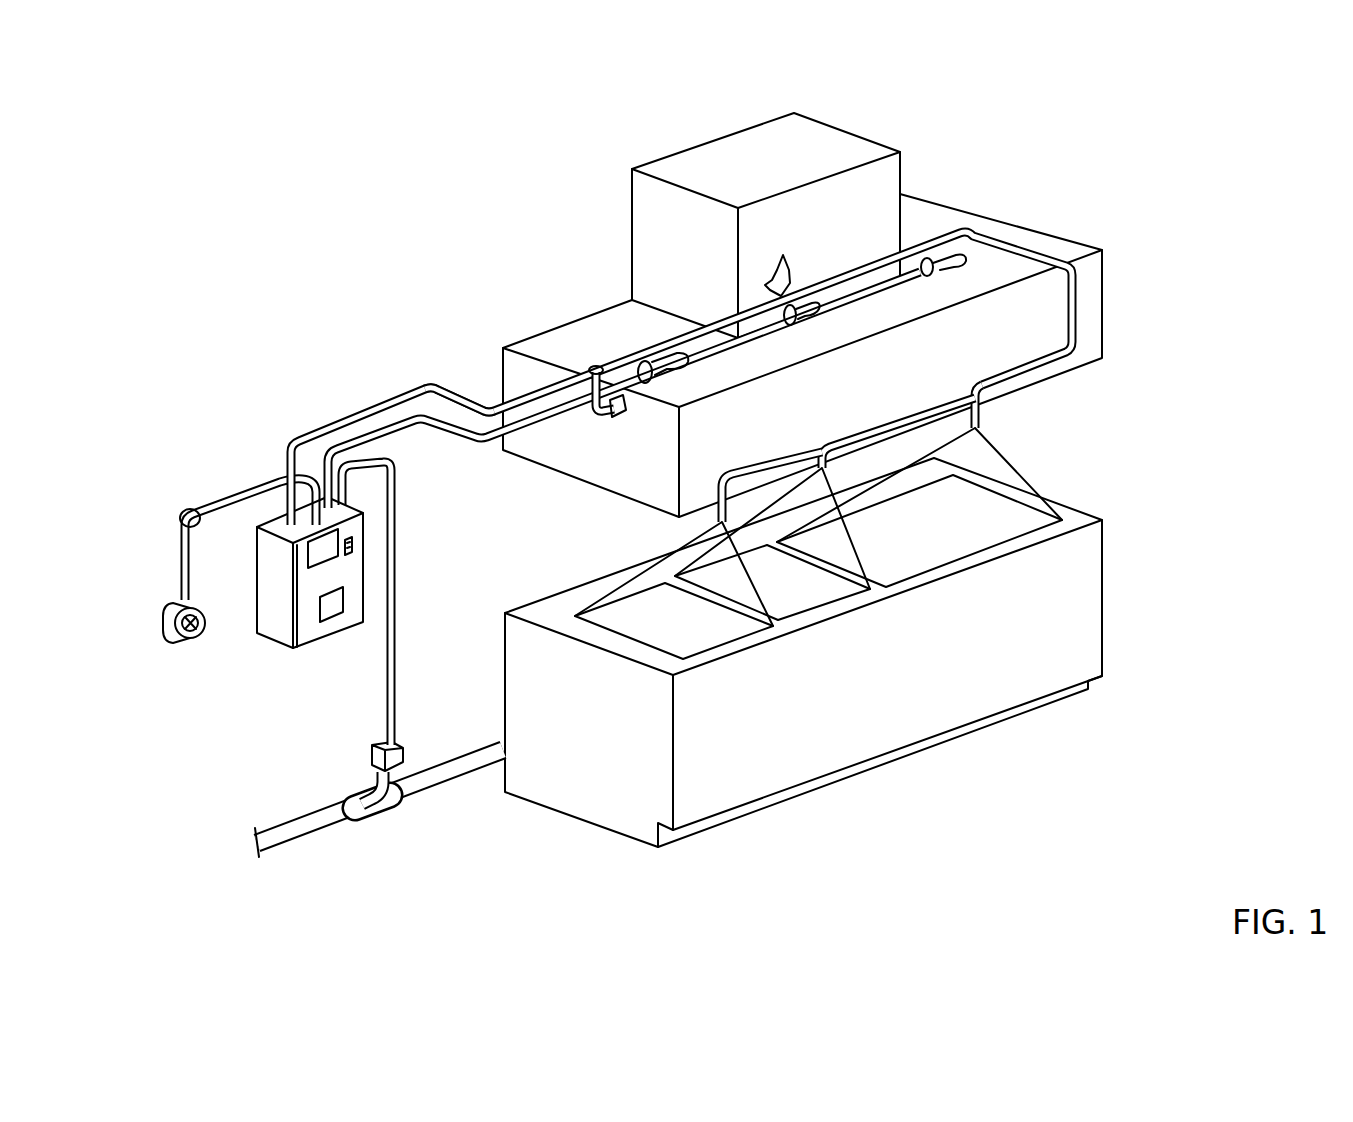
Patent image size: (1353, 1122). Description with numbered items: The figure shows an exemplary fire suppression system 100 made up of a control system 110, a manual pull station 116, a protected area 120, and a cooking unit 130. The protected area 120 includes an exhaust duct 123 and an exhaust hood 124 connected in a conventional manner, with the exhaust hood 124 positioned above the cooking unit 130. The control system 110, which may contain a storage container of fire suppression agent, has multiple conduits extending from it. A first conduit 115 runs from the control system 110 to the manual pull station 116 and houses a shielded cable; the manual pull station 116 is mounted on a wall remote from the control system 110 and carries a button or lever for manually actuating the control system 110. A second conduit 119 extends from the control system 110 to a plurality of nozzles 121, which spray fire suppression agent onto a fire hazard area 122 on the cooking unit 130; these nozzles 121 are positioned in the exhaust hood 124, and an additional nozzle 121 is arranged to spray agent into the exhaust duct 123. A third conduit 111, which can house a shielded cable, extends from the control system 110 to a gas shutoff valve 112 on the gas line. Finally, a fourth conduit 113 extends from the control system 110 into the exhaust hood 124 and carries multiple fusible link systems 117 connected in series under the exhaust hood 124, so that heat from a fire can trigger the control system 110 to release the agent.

The fire suppression system 100 is at (462, 217).
The control system 110 is at (283, 637).
The third conduit 111 is at (398, 692).
The gas shutoff valve 112 is at (372, 820).
The fourth conduit 113 is at (442, 442).
The first conduit 115 is at (175, 522).
The manual pull station 116 is at (172, 648).
The fusible link systems 117 is at (667, 360).
The second conduit 119 is at (348, 413).
The protected area 120 is at (742, 208).
The nozzles 121 is at (783, 253).
The fire hazard area 122 is at (1005, 540).
The exhaust duct 123 is at (832, 153).
The exhaust hood 124 is at (580, 358).
The cooking unit 130 is at (597, 795).